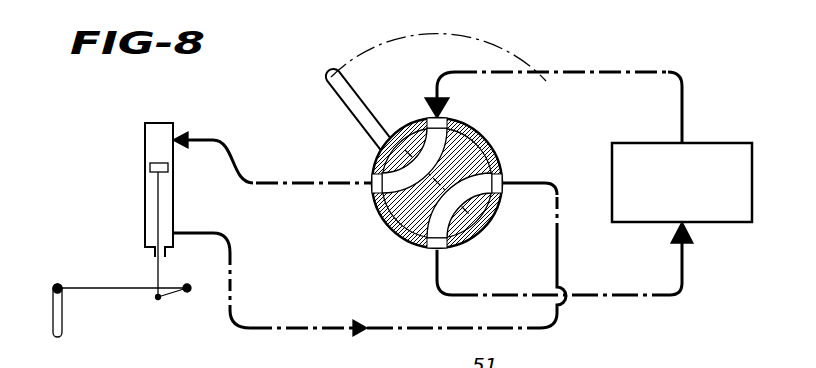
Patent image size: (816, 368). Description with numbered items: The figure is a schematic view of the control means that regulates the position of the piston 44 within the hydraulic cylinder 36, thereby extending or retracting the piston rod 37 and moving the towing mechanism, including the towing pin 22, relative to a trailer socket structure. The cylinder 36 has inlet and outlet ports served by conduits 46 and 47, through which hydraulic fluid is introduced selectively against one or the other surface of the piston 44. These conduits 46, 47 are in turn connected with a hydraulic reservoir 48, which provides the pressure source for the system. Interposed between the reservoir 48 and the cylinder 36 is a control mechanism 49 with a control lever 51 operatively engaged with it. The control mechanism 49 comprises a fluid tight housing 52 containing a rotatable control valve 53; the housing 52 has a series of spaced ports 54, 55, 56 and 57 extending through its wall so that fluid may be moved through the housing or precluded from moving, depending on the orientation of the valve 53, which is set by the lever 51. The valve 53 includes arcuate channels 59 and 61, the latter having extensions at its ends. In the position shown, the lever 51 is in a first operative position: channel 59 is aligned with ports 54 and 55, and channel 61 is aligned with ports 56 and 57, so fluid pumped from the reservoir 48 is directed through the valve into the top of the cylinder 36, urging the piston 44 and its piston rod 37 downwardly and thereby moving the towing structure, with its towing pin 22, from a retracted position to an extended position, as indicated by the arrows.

The towing pin 22 is at (63, 330).
The hydraulic cylinder 36 is at (174, 210).
The piston rod 37 is at (157, 214).
The piston 44 is at (149, 167).
The conduit 46 is at (198, 134).
The conduit 47 is at (226, 239).
The hydraulic reservoir 48 is at (712, 143).
The control mechanism 49 is at (437, 178).
The control lever 51 is at (359, 93).
The fluid tight housing 52 is at (405, 242).
The control valve 53 is at (439, 161).
The port 54 is at (379, 184).
The port 55 is at (439, 122).
The port 56 is at (498, 181).
The port 57 is at (444, 247).
The arcuate channel 59 is at (430, 147).
The arcuate channel 61 is at (494, 218).